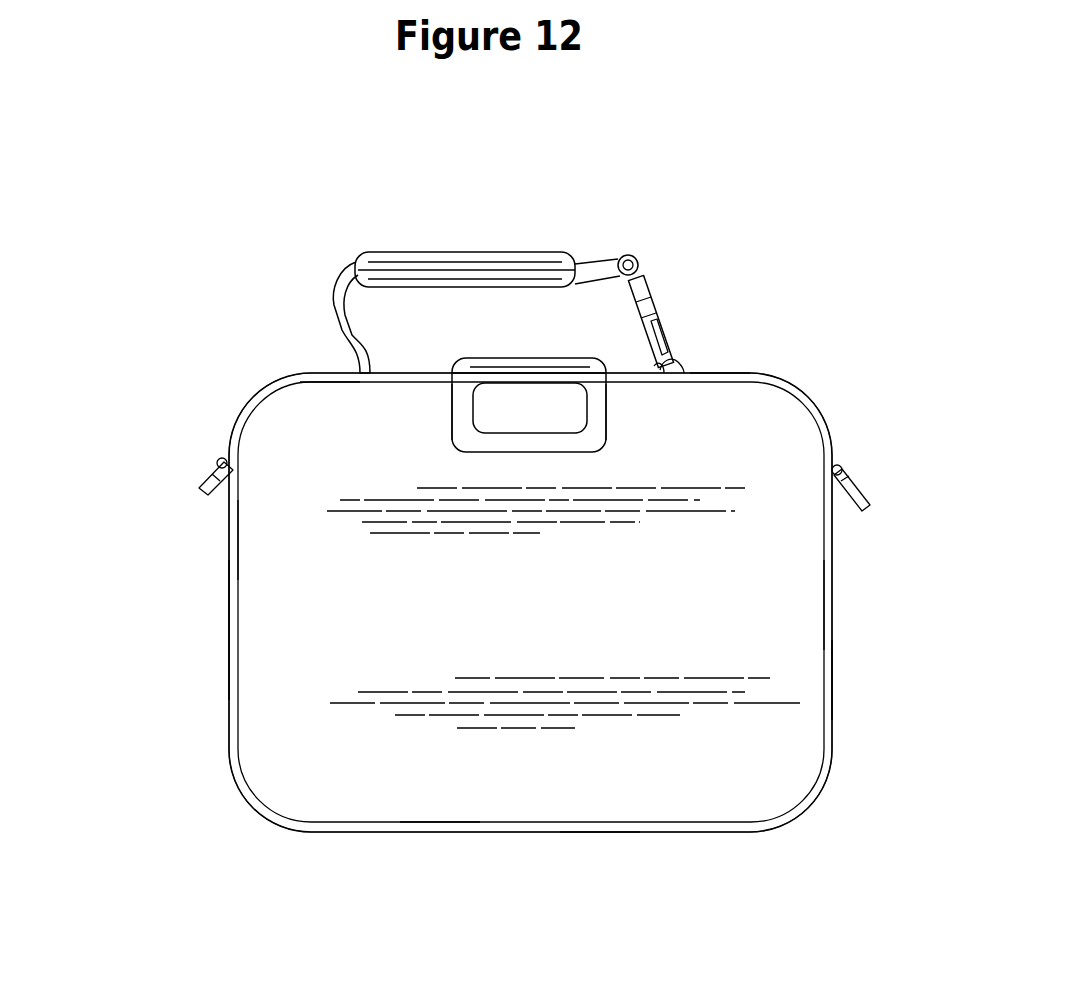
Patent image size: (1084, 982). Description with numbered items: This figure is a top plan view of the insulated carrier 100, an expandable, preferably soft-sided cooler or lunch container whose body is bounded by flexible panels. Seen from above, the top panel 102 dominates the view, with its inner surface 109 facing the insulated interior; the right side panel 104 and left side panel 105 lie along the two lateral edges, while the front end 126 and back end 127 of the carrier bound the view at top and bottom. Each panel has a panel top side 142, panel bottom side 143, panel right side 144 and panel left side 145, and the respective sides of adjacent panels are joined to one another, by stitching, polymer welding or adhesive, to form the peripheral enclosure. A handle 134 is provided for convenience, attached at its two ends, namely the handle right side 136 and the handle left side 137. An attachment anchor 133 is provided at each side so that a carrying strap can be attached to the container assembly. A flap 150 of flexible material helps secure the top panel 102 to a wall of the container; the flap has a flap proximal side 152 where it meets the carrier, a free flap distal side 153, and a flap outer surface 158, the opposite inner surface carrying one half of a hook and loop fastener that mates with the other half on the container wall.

The insulated carrier 100 is at (185, 835).
The top panel 102 is at (317, 576).
The right side panel 104 is at (830, 607).
The left side panel 105 is at (227, 632).
The inner surface 109 is at (347, 727).
The front end 126 is at (720, 377).
The back end 127 is at (590, 833).
The attachment anchor 133 is at (207, 477).
The handle 134 is at (480, 257).
The handle right side 136 is at (667, 317).
The handle left side 137 is at (360, 352).
The panel top side 142 is at (305, 382).
The panel bottom side 143 is at (438, 822).
The panel right side 144 is at (823, 680).
The panel left side 145 is at (237, 540).
The flap 150 is at (500, 395).
The flap proximal side 152 is at (537, 363).
The flap distal side 153 is at (520, 452).
The flap outer surface 158 is at (505, 408).